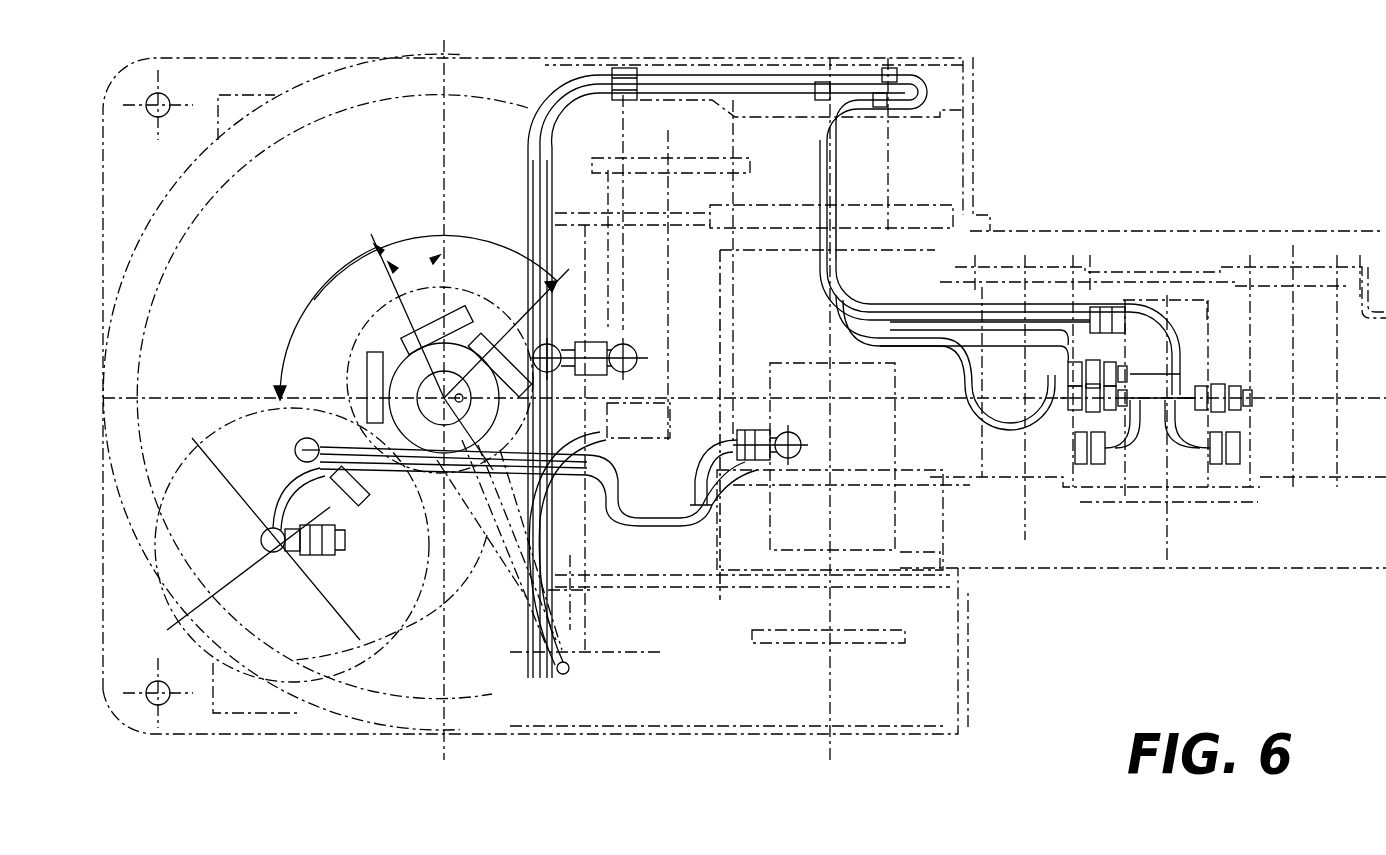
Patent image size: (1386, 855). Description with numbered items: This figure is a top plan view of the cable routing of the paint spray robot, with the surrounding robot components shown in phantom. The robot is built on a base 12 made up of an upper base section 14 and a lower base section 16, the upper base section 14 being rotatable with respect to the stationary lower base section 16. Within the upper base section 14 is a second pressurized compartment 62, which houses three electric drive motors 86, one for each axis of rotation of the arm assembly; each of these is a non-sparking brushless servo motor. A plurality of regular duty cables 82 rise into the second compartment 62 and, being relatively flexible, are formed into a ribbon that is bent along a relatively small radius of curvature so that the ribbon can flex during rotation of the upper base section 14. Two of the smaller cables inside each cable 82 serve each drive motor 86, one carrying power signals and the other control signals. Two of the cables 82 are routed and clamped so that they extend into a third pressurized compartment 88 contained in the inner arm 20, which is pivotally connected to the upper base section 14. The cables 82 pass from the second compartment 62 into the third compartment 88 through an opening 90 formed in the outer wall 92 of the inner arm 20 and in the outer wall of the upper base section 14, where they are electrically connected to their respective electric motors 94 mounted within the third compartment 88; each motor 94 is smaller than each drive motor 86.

The base 12 is at (465, 742).
The upper base section 14 is at (748, 736).
The lower base section 16 is at (245, 736).
The inner arm 20 is at (1112, 570).
The second compartment 62 is at (222, 208).
The regular duty cables 82 is at (370, 380).
The electric drive motor 86 is at (652, 440).
The third pressurized compartment 88 is at (908, 262).
The opening 90 is at (836, 249).
The outer wall 92 is at (730, 250).
The electric motors 94 is at (1032, 478).